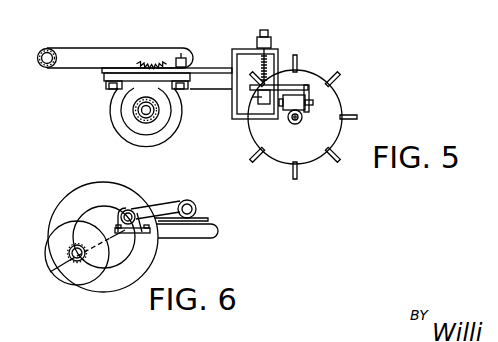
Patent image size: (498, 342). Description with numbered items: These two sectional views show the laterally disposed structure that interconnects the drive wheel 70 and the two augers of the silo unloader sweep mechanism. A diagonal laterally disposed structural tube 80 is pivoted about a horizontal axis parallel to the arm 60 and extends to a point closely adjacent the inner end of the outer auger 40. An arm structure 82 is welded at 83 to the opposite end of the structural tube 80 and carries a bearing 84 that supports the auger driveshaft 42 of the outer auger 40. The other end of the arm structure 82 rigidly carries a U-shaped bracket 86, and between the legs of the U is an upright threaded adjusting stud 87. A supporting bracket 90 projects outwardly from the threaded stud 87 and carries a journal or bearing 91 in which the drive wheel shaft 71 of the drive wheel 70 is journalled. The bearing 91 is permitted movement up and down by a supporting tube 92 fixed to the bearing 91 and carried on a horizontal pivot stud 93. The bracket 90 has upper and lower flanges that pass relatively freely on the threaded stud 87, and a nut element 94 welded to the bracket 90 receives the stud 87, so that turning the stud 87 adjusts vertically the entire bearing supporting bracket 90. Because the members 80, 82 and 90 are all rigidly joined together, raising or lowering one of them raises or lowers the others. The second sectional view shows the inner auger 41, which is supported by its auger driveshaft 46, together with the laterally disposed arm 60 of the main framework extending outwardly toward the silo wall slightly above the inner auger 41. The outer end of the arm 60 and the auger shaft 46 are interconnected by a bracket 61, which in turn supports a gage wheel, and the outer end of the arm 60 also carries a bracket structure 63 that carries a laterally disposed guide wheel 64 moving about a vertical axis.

In FIG. 5, the outer auger 40 is at (163, 138).
In FIG. 6, the inner auger 41 is at (70, 278).
In FIG. 5, the auger driveshaft 42 is at (157, 115).
In FIG. 6, the auger driveshaft 46 is at (73, 252).
In FIG. 6, the arm 60 is at (134, 211).
In FIG. 6, the bracket 61 is at (110, 226).
In FIG. 6, the bracket structure 63 is at (185, 201).
In FIG. 6, the guide wheel 64 is at (196, 235).
In FIG. 5, the drive wheel 70 is at (336, 97).
In FIG. 5, the drive wheel shaft 71 is at (290, 120).
In FIG. 5, the structural tube 80 is at (77, 53).
In FIG. 5, the arm structure 82 is at (198, 82).
In FIG. 5, the weld 83 is at (153, 63).
In FIG. 5, the bearing 84 is at (137, 121).
In FIG. 5, the U-shaped bracket 86 is at (245, 52).
In FIG. 5, the threaded adjusting stud 87 is at (271, 73).
In FIG. 5, the supporting bracket 90 is at (298, 98).
In FIG. 5, the bearing 91 is at (302, 119).
In FIG. 5, the supporting tube 92 is at (326, 90).
In FIG. 5, the pivot stud 93 is at (313, 102).
In FIG. 5, the nut element 94 is at (252, 97).